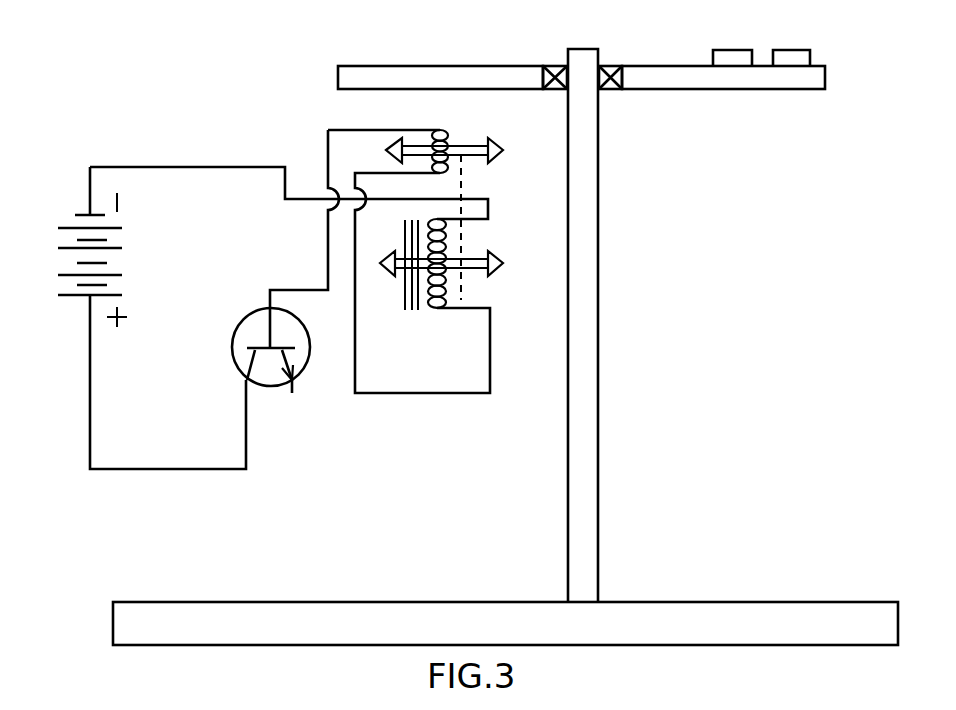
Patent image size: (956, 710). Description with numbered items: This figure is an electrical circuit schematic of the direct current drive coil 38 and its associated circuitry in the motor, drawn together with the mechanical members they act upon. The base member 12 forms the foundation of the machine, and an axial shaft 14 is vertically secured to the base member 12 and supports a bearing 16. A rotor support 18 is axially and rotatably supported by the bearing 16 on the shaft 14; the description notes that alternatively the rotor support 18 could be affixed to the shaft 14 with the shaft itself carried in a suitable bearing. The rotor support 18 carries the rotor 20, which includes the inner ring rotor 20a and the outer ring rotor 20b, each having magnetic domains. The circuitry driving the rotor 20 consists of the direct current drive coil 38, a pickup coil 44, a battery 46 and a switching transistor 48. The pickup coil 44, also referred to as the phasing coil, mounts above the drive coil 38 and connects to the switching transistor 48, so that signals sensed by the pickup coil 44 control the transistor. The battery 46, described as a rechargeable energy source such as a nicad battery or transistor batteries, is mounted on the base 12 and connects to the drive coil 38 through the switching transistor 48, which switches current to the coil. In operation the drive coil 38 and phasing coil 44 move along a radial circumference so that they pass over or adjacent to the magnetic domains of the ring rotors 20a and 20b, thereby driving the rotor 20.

The base member 12 is at (810, 602).
The axial shaft 14 is at (600, 448).
The bearing 16 is at (612, 68).
The rotor support 18 is at (825, 80).
The rotor 20 is at (399, 60).
The inner ring rotor 20a is at (717, 50).
The outer ring rotor 20b is at (783, 50).
The direct current drive coil 38 is at (437, 308).
The pickup coil 44 is at (428, 129).
The battery 46 is at (120, 263).
The switching transistor 48 is at (310, 342).